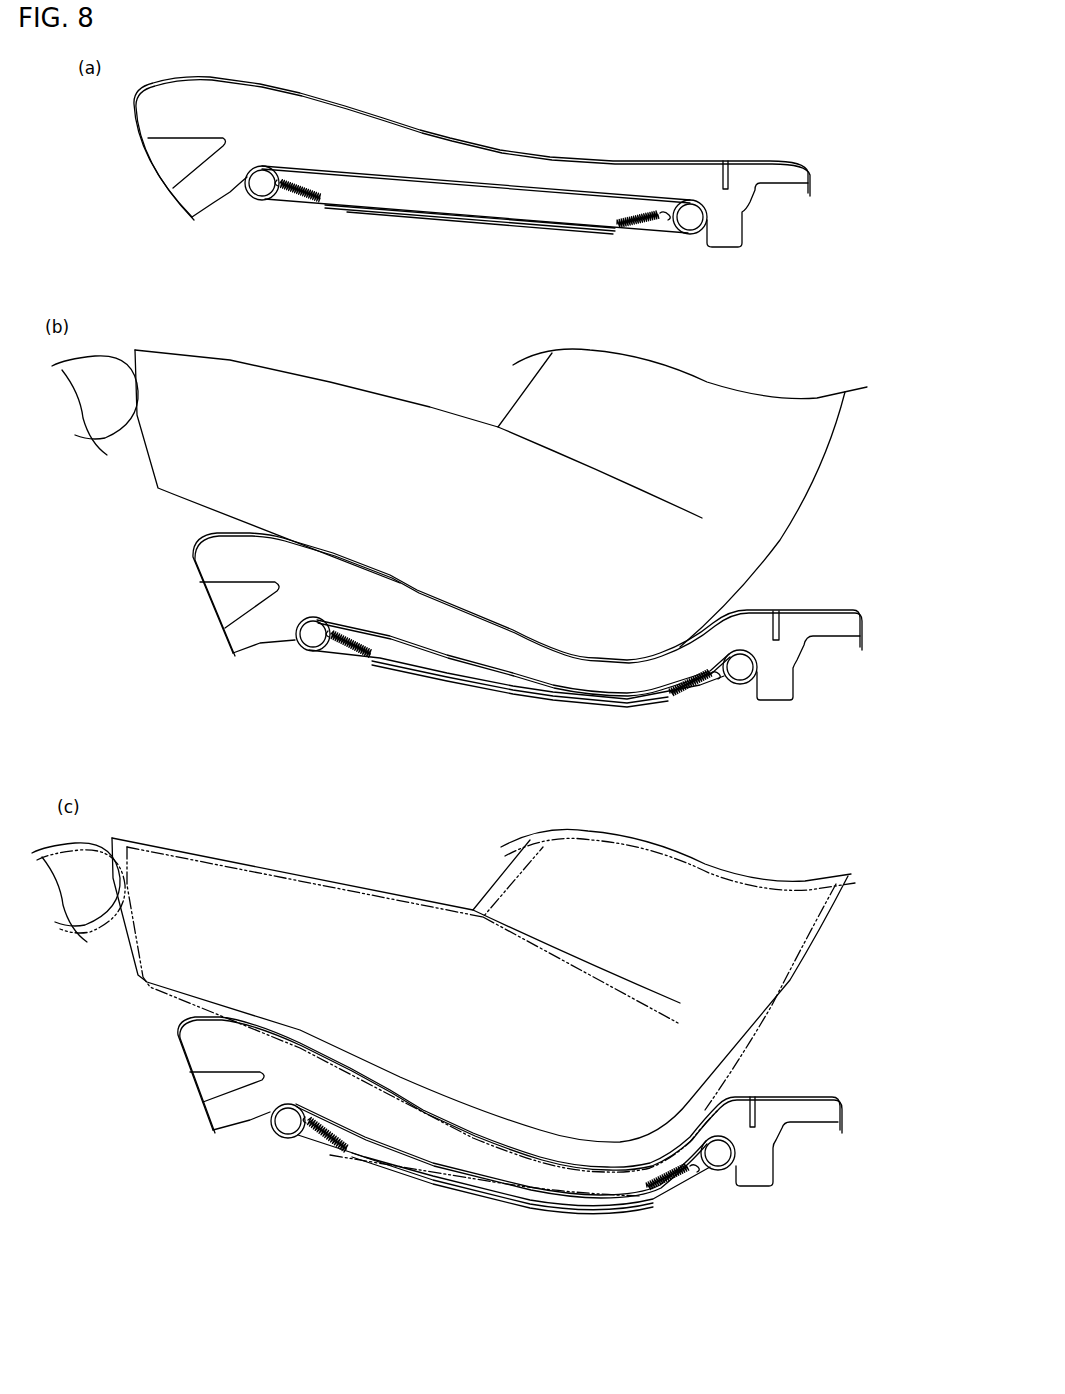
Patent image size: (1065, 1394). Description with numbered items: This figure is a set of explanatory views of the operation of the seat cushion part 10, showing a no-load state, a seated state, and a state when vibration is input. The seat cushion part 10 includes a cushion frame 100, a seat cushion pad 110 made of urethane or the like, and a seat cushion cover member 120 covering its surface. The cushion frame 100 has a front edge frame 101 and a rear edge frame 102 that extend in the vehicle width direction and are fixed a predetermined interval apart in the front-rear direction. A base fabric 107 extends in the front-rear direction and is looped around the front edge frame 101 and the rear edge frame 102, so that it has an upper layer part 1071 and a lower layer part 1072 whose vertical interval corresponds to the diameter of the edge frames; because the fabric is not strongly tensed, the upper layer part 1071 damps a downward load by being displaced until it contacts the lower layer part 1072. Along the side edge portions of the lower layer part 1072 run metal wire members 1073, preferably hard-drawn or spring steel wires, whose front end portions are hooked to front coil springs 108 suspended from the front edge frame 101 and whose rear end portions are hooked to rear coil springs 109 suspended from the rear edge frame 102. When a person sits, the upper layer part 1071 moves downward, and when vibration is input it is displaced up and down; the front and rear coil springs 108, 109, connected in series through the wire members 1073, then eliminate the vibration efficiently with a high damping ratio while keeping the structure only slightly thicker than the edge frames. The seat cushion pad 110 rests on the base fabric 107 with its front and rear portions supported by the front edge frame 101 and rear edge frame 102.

The seat cushion part 10 is at (500, 126).
The cushion frame 100 is at (254, 189).
The front edge frame 101 is at (264, 190).
The rear edge frame 102 is at (690, 222).
The base fabric 107 is at (401, 169).
The upper layer part 1071 is at (495, 178).
The lower layer part 1072 is at (447, 210).
The wire member 1073 is at (473, 222).
The front coil spring 108 is at (303, 197).
The rear coil spring 109 is at (633, 227).
The seat cushion pad 110 is at (584, 165).
The seat cushion cover member 120 is at (673, 160).